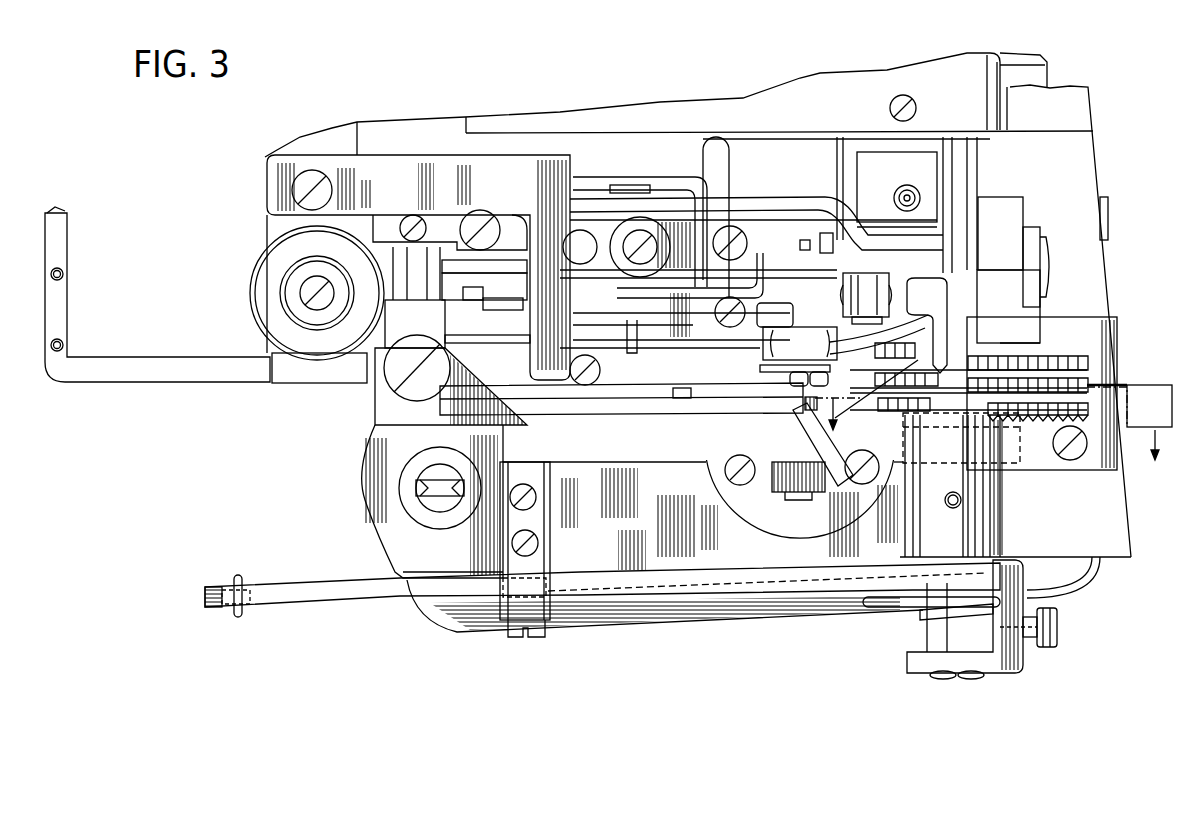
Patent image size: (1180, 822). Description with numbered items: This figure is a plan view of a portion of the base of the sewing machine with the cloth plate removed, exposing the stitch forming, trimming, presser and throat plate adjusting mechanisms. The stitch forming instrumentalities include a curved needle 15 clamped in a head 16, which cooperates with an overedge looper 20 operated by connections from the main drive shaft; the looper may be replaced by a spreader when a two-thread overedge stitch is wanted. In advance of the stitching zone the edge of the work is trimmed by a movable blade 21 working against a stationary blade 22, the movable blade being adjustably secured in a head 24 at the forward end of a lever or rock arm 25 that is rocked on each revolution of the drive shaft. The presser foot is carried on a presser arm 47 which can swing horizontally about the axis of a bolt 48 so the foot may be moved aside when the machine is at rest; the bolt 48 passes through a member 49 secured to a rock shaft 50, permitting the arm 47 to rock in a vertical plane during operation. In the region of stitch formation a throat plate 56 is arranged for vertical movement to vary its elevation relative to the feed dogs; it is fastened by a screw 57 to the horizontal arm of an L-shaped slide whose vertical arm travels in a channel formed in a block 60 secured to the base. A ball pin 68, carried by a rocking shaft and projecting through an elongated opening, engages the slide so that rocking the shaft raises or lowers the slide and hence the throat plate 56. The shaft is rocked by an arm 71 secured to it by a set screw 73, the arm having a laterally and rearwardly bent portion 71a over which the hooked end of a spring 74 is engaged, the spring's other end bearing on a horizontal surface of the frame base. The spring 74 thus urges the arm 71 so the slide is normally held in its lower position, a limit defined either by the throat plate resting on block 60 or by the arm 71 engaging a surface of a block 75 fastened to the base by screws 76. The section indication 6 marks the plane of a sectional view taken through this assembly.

The section line 6- 6 is at (988, 437).
The curved needle 15 is at (918, 360).
The head 16 is at (765, 352).
The overedge looper 20 is at (947, 333).
The movable blade 21 is at (1017, 322).
The stationary blade 22 is at (1020, 343).
The head 24 is at (990, 233).
The lever or rock arm 25 is at (783, 200).
The presser arm 47 is at (624, 410).
The bolt 48 is at (395, 378).
The member 49 is at (437, 325).
The rock shaft 50 is at (416, 273).
The throat plate 56 is at (1117, 350).
The screw 57 is at (1075, 462).
The block 60 is at (1000, 506).
The ball pin 68 is at (950, 450).
The arm 71 is at (368, 597).
The bent portion 71a is at (1020, 652).
The set screw 73 is at (1057, 643).
The spring 74 is at (890, 603).
The block 75 is at (545, 527).
The screws 76 is at (540, 495).